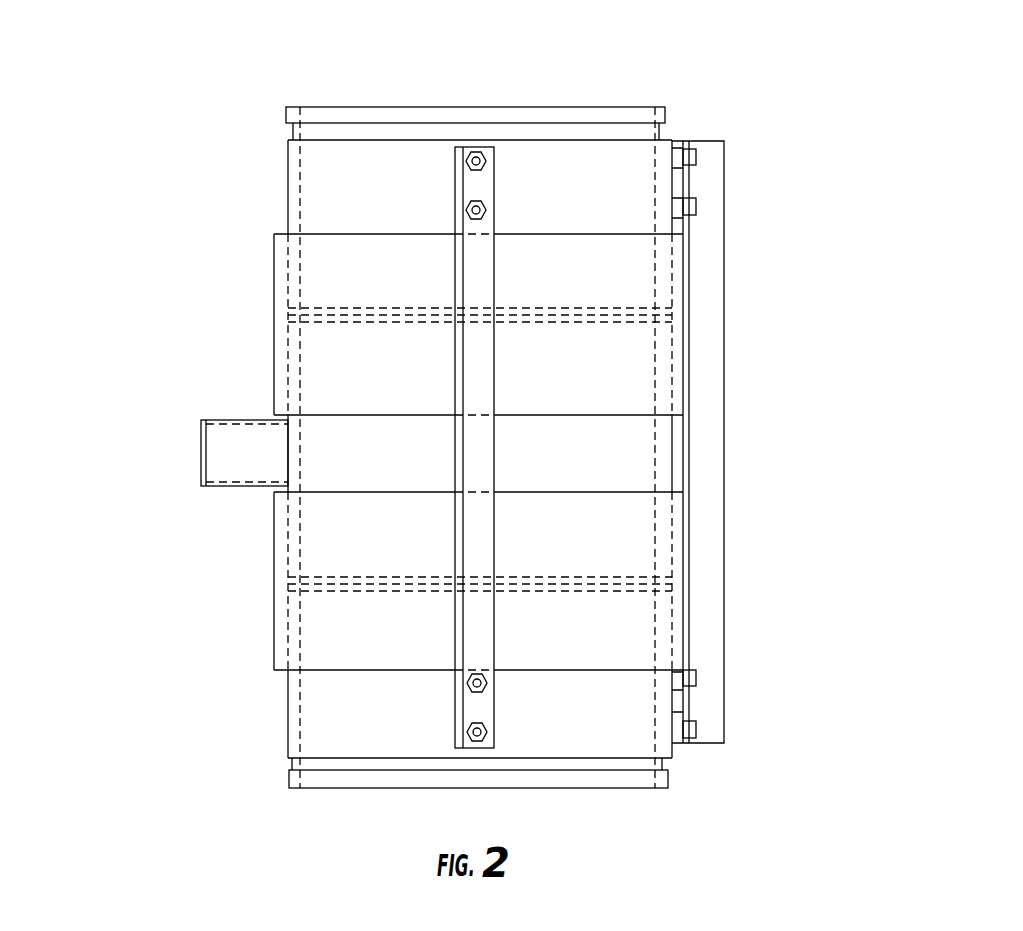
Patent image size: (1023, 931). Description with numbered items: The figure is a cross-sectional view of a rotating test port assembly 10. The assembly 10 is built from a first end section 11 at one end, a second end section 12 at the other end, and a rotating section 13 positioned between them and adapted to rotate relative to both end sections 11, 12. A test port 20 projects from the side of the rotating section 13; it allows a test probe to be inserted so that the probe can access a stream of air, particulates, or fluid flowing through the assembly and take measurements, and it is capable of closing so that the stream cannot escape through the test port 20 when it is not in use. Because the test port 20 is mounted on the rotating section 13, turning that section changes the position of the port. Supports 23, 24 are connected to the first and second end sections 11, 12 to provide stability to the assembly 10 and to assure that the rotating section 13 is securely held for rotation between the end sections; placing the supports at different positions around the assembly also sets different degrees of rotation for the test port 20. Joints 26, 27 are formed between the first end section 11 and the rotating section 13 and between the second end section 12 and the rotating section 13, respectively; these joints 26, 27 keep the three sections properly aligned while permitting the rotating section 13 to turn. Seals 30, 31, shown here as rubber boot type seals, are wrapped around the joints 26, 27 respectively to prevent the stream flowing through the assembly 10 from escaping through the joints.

The test port assembly 10 is at (883, 103).
The first end section 11 is at (623, 160).
The second end section 12 is at (623, 738).
The rotating section 13 is at (707, 420).
The test port 20 is at (209, 419).
The support 23 is at (483, 705).
The support 24 is at (710, 717).
The joint 26 is at (642, 302).
The joint 27 is at (648, 572).
The seal 30 is at (282, 288).
The seal 31 is at (273, 560).